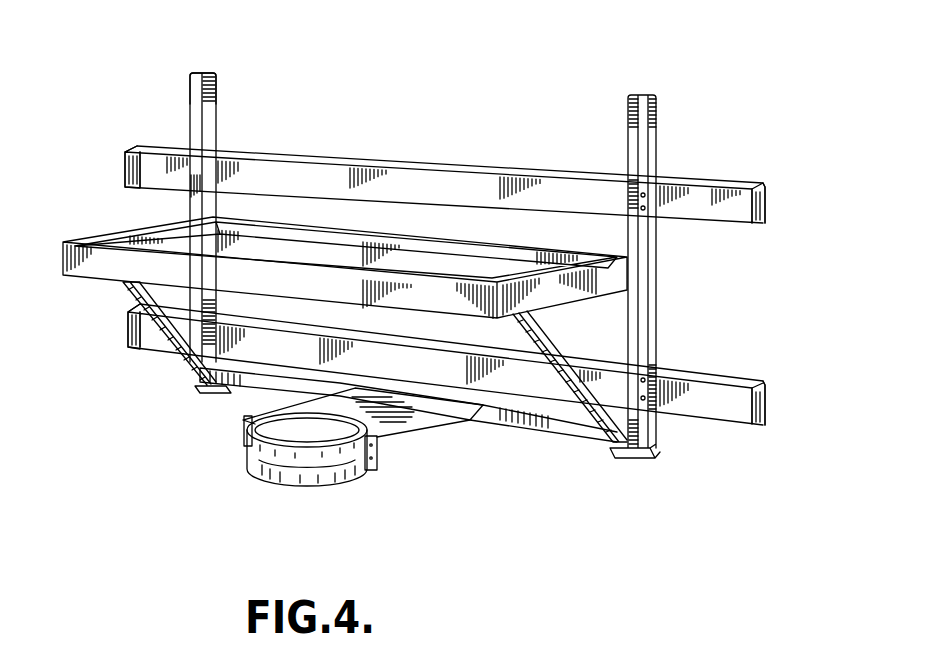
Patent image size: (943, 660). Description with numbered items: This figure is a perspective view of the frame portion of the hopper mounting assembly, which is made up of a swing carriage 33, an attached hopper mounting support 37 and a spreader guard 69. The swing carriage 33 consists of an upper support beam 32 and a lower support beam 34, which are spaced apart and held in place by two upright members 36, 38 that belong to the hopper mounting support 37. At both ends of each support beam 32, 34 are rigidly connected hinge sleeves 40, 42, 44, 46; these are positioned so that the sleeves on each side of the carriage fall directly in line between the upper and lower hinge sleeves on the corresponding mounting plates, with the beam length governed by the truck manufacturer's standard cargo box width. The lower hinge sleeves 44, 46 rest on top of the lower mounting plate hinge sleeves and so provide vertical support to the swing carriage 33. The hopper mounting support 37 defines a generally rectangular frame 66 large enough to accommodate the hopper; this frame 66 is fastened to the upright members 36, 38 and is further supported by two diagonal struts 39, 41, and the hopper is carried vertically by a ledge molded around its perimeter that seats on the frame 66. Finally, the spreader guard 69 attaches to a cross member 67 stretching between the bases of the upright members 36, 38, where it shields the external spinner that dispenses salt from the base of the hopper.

The upper support beam 32 is at (690, 188).
The swing carriage 33 is at (750, 265).
The lower support beam 34 is at (690, 387).
The upright member 36 is at (213, 100).
The hopper mounting support 37 is at (200, 73).
The upright member 38 is at (657, 113).
The diagonal strut 39 is at (587, 413).
The hinge sleeve 40 is at (125, 167).
The diagonal strut 41 is at (170, 347).
The hinge sleeve 42 is at (767, 193).
The hinge sleeve 44 is at (128, 323).
The hinge sleeve 46 is at (765, 402).
The rectangular frame 66 is at (93, 262).
The cross member 67 is at (510, 422).
The spreader guard 69 is at (247, 462).